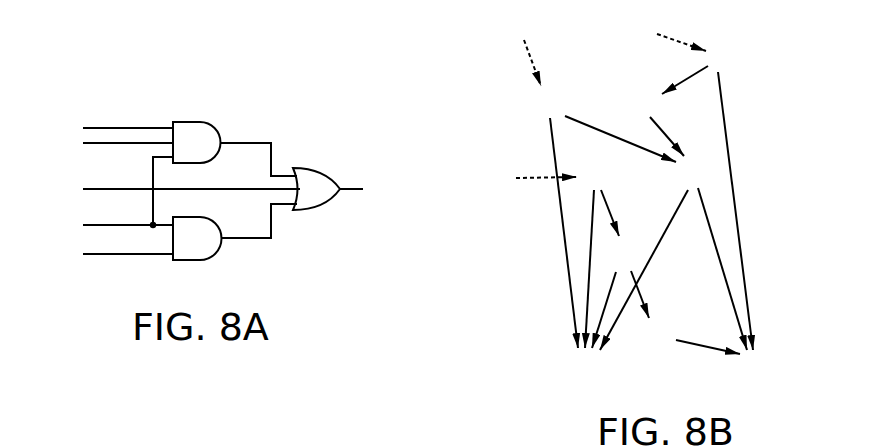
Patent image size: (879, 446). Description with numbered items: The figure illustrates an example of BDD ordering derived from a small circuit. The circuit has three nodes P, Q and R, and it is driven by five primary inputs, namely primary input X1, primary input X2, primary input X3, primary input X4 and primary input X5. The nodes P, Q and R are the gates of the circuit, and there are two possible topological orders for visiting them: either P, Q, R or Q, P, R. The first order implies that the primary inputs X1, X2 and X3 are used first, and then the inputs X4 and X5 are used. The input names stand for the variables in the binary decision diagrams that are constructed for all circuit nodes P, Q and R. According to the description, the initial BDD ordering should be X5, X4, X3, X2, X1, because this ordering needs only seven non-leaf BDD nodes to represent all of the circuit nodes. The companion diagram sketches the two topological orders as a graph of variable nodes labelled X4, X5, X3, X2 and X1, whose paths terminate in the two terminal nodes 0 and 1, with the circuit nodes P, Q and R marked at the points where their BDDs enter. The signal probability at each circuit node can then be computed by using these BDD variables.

In FIG. 8A, the primary input x1 X1 is at (108, 120).
In FIG. 8B, the primary input x1 X1 is at (691, 338).
In FIG. 8A, the primary input x2 X2 is at (108, 150).
In FIG. 8B, the primary input x2 X2 is at (620, 295).
In FIG. 8A, the primary input x3 X3 is at (171, 190).
In FIG. 8B, the primary input x3 X3 is at (664, 255).
In FIG. 8A, the primary input x4 X4 is at (108, 227).
In FIG. 8B, the primary input x4 X4 is at (608, 219).
In FIG. 8A, the primary input x5 X5 is at (108, 257).
In FIG. 8B, the primary input x5 X5 is at (707, 197).
In FIG. 8A, the circuit node P is at (258, 143).
In FIG. 8B, the circuit node P is at (537, 179).
In FIG. 8A, the circuit node Q is at (259, 237).
In FIG. 8B, the circuit node Q is at (527, 48).
In FIG. 8A, the circuit node R is at (363, 190).
In FIG. 8B, the circuit node R is at (671, 34).
In FIG. 8B, the terminal node 0 of binary decision diagram 0 is at (582, 365).
In FIG. 8B, the terminal node 1 of binary decision diagram 1 is at (755, 367).